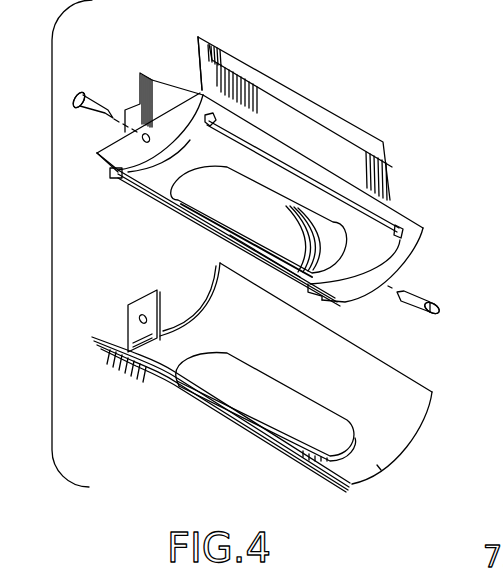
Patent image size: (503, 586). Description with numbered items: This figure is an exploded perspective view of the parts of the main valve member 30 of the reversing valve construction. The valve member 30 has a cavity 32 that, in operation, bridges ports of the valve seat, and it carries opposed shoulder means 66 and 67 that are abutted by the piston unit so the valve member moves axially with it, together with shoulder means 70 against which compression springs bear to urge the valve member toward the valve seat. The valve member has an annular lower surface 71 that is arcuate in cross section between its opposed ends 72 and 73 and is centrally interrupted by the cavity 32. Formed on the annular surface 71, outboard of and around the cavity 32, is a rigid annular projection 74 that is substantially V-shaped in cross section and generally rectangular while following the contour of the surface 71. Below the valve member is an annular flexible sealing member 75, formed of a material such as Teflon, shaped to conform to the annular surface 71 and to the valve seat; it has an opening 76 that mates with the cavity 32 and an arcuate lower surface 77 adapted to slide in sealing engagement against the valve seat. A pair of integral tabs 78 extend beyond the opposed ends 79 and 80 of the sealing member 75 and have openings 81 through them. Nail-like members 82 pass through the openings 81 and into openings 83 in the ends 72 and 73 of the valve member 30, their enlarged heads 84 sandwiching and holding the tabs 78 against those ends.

The main valve member 30 is at (383, 177).
The cavity 32 is at (188, 205).
The shoulder means 66 is at (205, 72).
The shoulder means 67 is at (393, 195).
The shoulder means 70 is at (185, 83).
The annular lower surface 71 is at (277, 177).
The end 72 is at (123, 155).
The end 73 is at (410, 260).
The annular projection 74 is at (252, 148).
The annular flexible sealing member 75 is at (390, 385).
The opening 76 is at (310, 401).
The arcuate lower surface 77 is at (153, 360).
The tabs 78 is at (145, 302).
The end 79 is at (165, 320).
The end 80 is at (403, 445).
The openings 81 is at (137, 318).
The nail-like members 82 is at (103, 97).
The openings 83 is at (140, 142).
The enlarged heads 84 is at (91, 67).